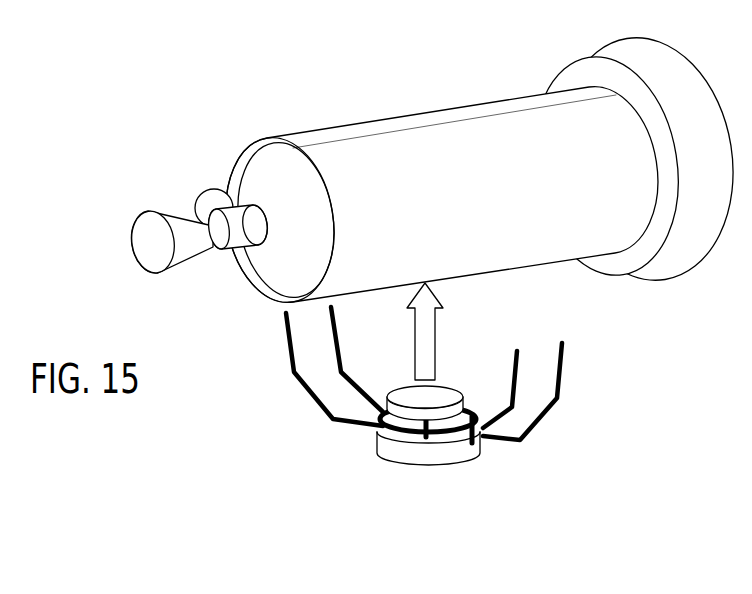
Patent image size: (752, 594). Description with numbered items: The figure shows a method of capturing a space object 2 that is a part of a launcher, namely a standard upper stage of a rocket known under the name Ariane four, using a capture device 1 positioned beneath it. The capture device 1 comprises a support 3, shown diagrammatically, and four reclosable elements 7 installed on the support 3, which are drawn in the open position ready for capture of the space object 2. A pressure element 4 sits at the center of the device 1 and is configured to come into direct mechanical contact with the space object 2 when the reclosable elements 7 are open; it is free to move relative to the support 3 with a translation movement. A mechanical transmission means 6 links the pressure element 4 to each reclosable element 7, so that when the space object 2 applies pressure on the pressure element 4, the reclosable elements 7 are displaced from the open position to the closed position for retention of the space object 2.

The capture device 1 is at (470, 436).
The space object 2 is at (433, 150).
The support 3 is at (388, 453).
The pressure element 4 is at (408, 396).
The mechanical transmission means 6 is at (477, 381).
The reclosable elements 7 is at (470, 366).